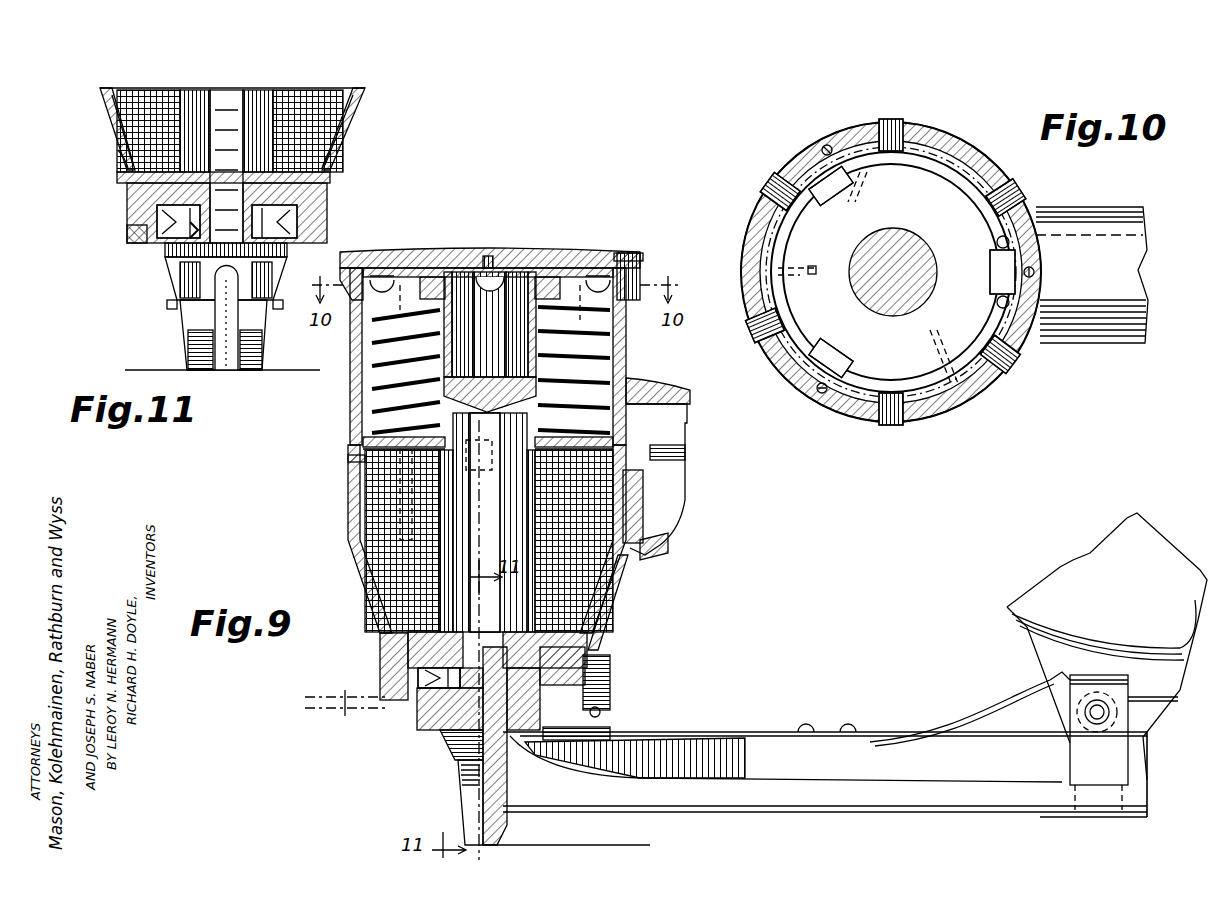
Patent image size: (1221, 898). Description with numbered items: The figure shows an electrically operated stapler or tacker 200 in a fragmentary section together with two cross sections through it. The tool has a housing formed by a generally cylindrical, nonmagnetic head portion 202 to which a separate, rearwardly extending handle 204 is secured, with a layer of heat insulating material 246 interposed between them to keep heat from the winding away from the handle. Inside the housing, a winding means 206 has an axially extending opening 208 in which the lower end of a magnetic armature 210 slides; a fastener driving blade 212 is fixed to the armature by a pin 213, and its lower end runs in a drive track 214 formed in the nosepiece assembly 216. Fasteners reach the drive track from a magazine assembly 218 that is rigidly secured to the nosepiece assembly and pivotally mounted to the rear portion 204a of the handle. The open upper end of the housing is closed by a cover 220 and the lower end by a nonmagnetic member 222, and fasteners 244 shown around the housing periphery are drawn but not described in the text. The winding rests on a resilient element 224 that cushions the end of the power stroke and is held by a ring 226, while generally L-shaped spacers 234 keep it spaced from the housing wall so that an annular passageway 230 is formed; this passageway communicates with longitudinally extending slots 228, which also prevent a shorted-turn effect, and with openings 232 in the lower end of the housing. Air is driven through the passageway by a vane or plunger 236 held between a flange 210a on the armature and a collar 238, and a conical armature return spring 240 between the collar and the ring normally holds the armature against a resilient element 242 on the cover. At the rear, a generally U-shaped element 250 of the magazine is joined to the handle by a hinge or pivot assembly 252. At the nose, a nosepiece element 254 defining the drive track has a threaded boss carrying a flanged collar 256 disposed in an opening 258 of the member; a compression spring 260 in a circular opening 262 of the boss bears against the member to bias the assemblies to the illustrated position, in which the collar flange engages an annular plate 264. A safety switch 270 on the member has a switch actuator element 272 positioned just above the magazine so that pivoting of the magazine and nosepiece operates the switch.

In FIG. 9, the electrically operated stapler or tacker 200 is at (899, 559).
In FIG. 9, the head portion 202 is at (350, 350).
In FIG. 10, the head portion 202 is at (950, 142).
In FIG. 11, the head portion 202 is at (100, 88).
In FIG. 9, the handle 204 is at (690, 398).
In FIG. 10, the handle 204 is at (1120, 207).
In FIG. 9, the rear portion of the handle 204a is at (1158, 542).
In FIG. 9, the winding means 206 is at (375, 508).
In FIG. 11, the winding means 206 is at (295, 100).
In FIG. 9, the axially extending opening 208 is at (450, 575).
In FIG. 11, the axially extending opening 208 is at (190, 100).
In FIG. 9, the magnetic armature 210 is at (444, 374).
In FIG. 10, the magnetic armature 210 is at (915, 236).
In FIG. 9, the flange 210a is at (575, 270).
In FIG. 9, the fastener driving blade 212 is at (485, 556).
In FIG. 11, the fastener driving blade 212 is at (225, 95).
In FIG. 9, the pin 213 is at (475, 440).
In FIG. 9, the drive track 214 is at (497, 825).
In FIG. 11, the drive track 214 is at (210, 316).
In FIG. 9, the nosepiece assembly 216 is at (460, 808).
In FIG. 11, the nosepiece assembly 216 is at (185, 340).
In FIG. 9, the magazine assembly 218 is at (715, 822).
In FIG. 9, the cover 220 is at (555, 256).
In FIG. 9, the nonmagnetic member 222 is at (385, 675).
In FIG. 9, the resilient element 224 is at (510, 635).
In FIG. 11, the resilient element 224 is at (127, 178).
In FIG. 9, the ring 226 is at (360, 438).
In FIG. 10, the ring 226 is at (778, 242).
In FIG. 9, the slots 228 is at (360, 455).
In FIG. 10, the slots 228 is at (945, 190).
In FIG. 9, the annular passageway or air conveying means 230 is at (355, 540).
In FIG. 10, the annular passageway or air conveying means 230 is at (990, 162).
In FIG. 11, the annular passageway or air conveying means 230 is at (115, 118).
In FIG. 9, the openings 232 is at (605, 625).
In FIG. 11, the openings 232 is at (118, 162).
In FIG. 9, the L-shaped spacers 234 is at (410, 490).
In FIG. 10, the L-shaped spacers 234 is at (830, 180).
In FIG. 9, the vane or plunger 236 is at (358, 262).
In FIG. 9, the collar 238 is at (440, 278).
In FIG. 9, the conical armature return spring 240 is at (580, 333).
In FIG. 9, the resilient element 242 is at (458, 270).
In FIG. 9, the bolt 244 is at (385, 272).
In FIG. 10, the bolt 244 is at (895, 122).
In FIG. 9, the heat insulating material 246 is at (640, 380).
In FIG. 9, the U-shaped element 250 is at (1120, 755).
In FIG. 9, the hinge or pivot assembly 252 is at (1118, 712).
In FIG. 9, the nosepiece element 254 is at (450, 742).
In FIG. 11, the nosepiece element 254 is at (215, 258).
In FIG. 9, the flanged collar 256 is at (430, 722).
In FIG. 11, the flanged collar 256 is at (150, 212).
In FIG. 9, the opening 258 is at (562, 663).
In FIG. 11, the opening 258 is at (155, 224).
In FIG. 9, the compression spring 260 is at (518, 740).
In FIG. 11, the compression spring 260 is at (165, 249).
In FIG. 9, the circular opening 262 is at (425, 688).
In FIG. 11, the circular opening 262 is at (162, 240).
In FIG. 9, the annular plate 264 is at (375, 700).
In FIG. 11, the annular plate 264 is at (127, 238).
In FIG. 9, the safety switch 270 is at (610, 675).
In FIG. 9, the switch actuator element 272 is at (600, 712).